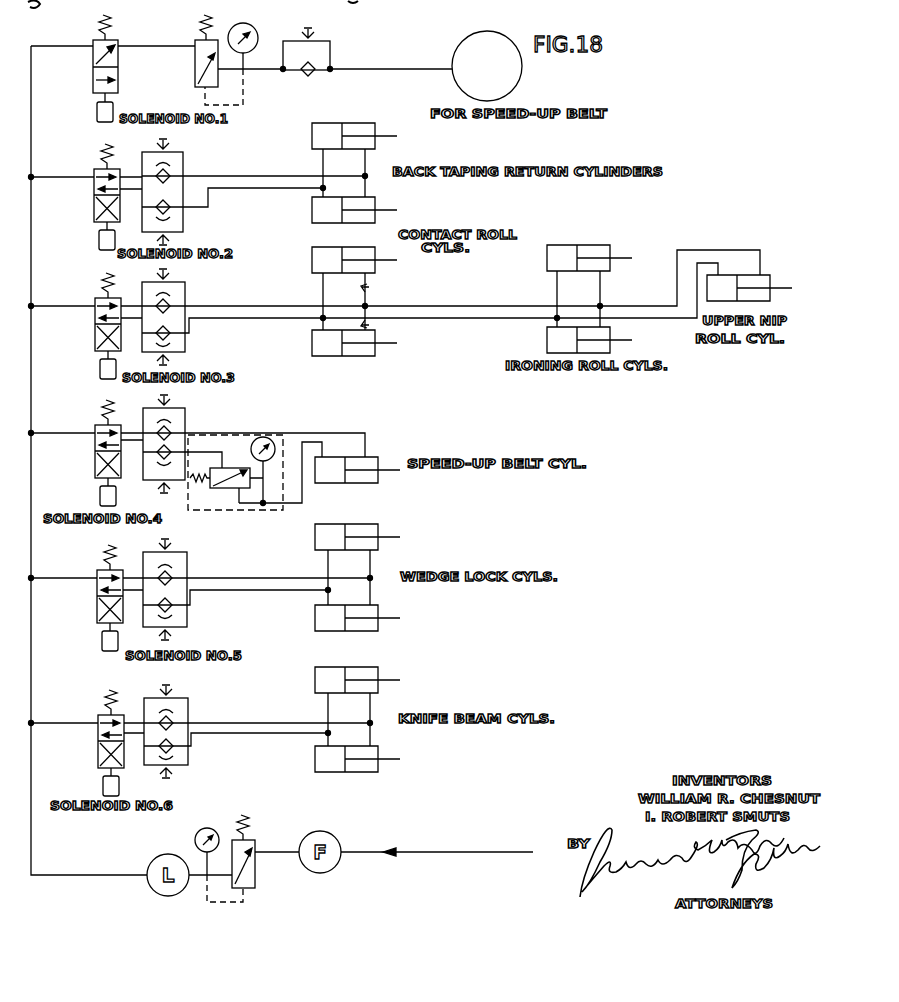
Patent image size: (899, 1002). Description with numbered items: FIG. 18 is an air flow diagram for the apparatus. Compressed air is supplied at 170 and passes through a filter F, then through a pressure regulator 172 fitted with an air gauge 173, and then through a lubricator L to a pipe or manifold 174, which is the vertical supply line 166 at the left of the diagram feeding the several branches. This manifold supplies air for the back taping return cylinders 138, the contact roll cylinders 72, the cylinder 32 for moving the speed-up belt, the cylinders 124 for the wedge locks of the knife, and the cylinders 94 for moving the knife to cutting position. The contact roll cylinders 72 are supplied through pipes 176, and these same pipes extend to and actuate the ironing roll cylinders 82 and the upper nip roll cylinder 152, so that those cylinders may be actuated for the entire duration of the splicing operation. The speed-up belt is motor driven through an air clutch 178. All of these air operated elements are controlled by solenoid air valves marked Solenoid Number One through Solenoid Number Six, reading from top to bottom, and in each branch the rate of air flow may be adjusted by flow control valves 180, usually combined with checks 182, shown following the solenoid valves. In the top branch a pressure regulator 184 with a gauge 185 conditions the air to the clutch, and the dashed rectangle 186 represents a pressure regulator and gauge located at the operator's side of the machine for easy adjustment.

The air supply line 166 is at (33, 2).
The compressed air supply 170 is at (507, 852).
The pressure regulator 172 is at (255, 880).
The air gauge 173 is at (209, 825).
The pipe or manifold 174 is at (40, 848).
The pipes 176 is at (233, 305).
The air clutch 178 is at (486, 31).
The flow control valves 180 is at (330, 45).
The checks 182 is at (310, 78).
The pressure regulator 184 is at (195, 70).
The gauge 185 is at (257, 30).
The pressure regulator and gauge 186 is at (222, 510).
The back taping return cylinders 138 is at (312, 137).
The contact roll cylinders 72 is at (312, 266).
The ironing roll cylinders 82 is at (561, 245).
The upper nip roll cylinder 152 is at (768, 275).
The cylinder for moving the speed-up belt 32 is at (333, 483).
The cylinders for the wedge locks 124 is at (315, 542).
The cylinders for moving the knife 94 is at (315, 683).